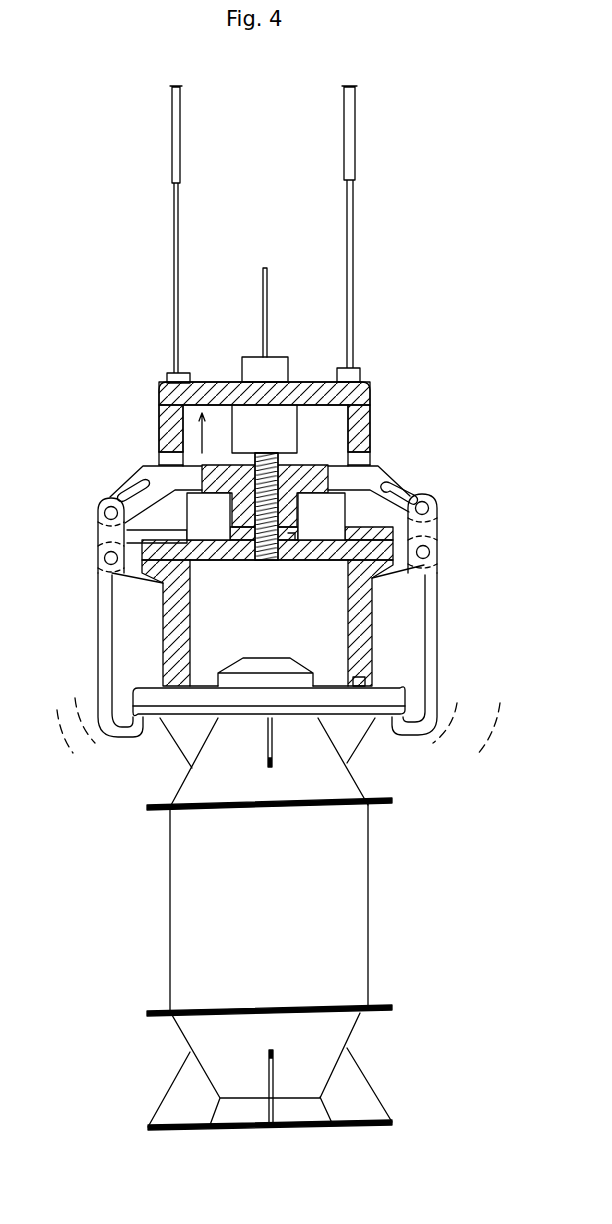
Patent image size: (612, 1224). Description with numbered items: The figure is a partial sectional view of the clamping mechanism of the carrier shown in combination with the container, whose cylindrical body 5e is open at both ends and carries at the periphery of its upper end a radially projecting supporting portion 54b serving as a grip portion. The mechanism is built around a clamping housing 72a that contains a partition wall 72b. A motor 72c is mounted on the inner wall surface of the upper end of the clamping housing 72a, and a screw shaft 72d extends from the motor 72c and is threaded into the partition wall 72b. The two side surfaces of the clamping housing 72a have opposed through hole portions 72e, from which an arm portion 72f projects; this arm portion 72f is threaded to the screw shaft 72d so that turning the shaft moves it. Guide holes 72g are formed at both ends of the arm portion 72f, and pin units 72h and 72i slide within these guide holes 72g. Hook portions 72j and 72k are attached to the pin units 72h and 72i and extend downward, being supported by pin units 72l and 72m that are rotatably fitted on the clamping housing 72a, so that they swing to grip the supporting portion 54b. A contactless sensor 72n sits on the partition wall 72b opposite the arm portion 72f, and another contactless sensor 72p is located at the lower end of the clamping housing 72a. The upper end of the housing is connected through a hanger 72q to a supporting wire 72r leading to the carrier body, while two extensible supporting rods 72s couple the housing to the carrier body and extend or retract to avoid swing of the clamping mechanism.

The clamping housing 72a is at (160, 410).
The partition wall 72b is at (233, 560).
The motor 72c is at (297, 443).
The screw shaft 72d is at (250, 530).
The through hole portions 72e is at (153, 466).
The arm portion 72f is at (333, 497).
The guide holes 72g is at (130, 492).
The pin unit 72h is at (433, 508).
The pin unit 72i is at (97, 516).
The hook portion 72j is at (437, 580).
The hook portion 72k is at (97, 636).
The pin unit 72l is at (434, 552).
The pin unit 72m is at (105, 563).
The contactless sensor 72n is at (295, 560).
The contactless sensor 72p is at (348, 676).
The hanger 72q is at (285, 357).
The supporting wire 72r is at (268, 283).
The extensible supporting rods 72s is at (181, 163).
The supporting portion 54b is at (155, 713).
The cylinder body 5e is at (368, 890).